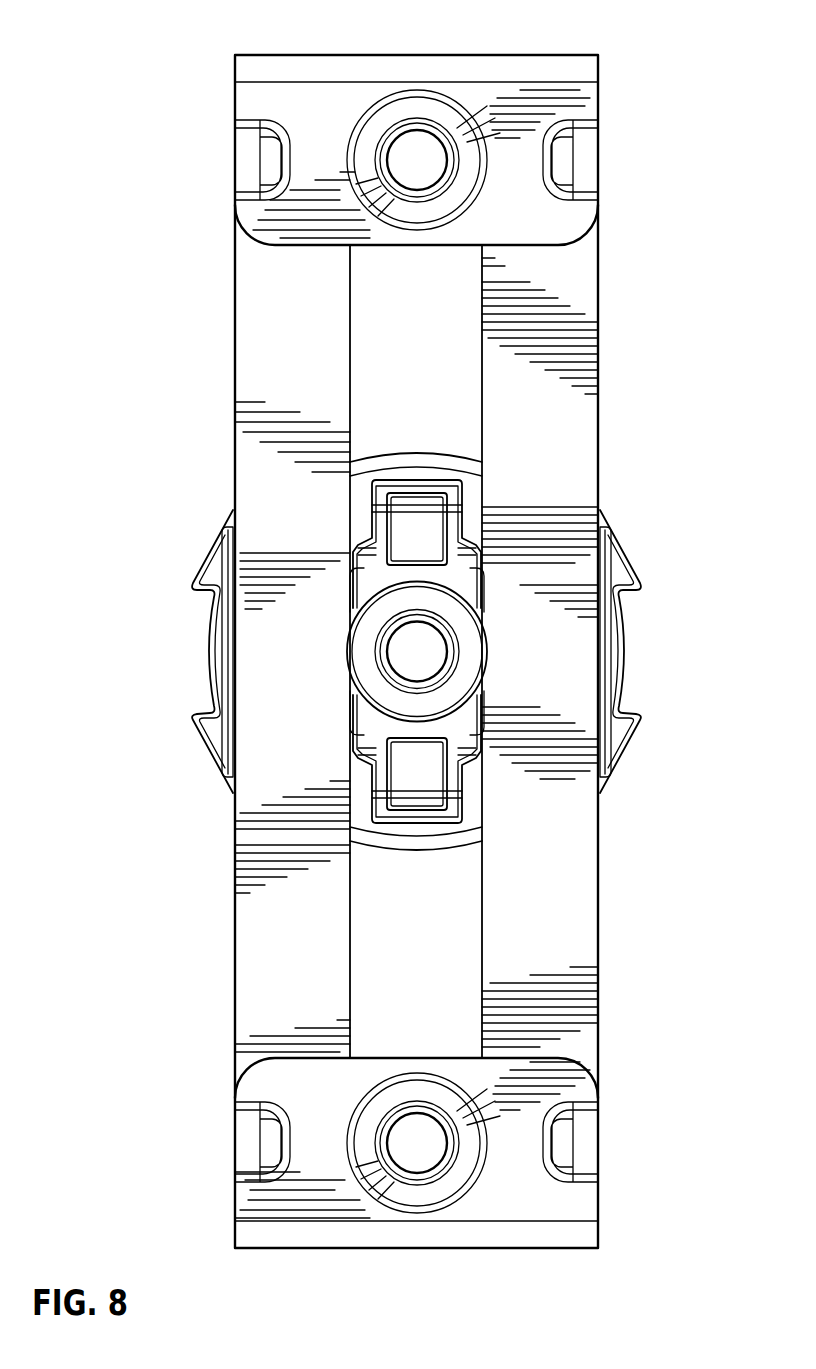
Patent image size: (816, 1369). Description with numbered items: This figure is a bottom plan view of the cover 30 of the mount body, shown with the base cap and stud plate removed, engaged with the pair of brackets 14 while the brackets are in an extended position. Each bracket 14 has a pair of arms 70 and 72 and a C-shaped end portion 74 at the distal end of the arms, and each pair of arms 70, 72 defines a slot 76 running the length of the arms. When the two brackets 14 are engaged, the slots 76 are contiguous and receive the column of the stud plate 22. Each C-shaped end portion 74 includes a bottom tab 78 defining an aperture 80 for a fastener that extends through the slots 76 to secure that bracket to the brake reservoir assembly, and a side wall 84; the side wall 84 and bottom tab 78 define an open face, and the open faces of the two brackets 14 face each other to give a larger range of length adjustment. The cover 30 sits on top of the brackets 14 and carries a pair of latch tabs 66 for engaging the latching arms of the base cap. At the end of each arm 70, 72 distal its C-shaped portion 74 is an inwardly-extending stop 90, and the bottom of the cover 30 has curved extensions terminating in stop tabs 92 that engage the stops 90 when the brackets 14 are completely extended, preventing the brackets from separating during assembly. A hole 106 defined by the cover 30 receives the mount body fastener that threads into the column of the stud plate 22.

The bracket 14 is at (565, 437).
The stud plate 22 is at (478, 682).
The cover 30 is at (627, 738).
The latch tab 66 is at (207, 645).
The arm 70 is at (565, 273).
The arm 72 is at (262, 270).
The C-shaped end portion 74 is at (540, 55).
The slot 76 is at (482, 298).
The bottom tab 78 is at (565, 100).
The aperture 80 is at (412, 134).
The side wall 84 is at (292, 54).
The stop 90 is at (355, 555).
The stop tab 92 is at (360, 600).
The hole 106 is at (400, 662).